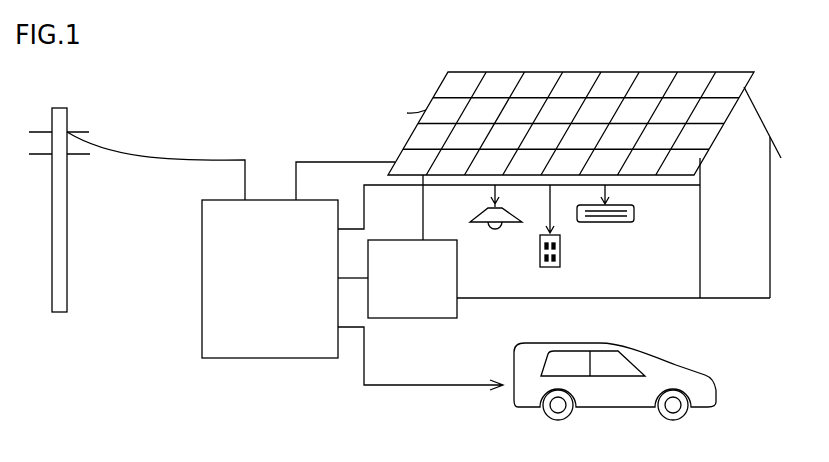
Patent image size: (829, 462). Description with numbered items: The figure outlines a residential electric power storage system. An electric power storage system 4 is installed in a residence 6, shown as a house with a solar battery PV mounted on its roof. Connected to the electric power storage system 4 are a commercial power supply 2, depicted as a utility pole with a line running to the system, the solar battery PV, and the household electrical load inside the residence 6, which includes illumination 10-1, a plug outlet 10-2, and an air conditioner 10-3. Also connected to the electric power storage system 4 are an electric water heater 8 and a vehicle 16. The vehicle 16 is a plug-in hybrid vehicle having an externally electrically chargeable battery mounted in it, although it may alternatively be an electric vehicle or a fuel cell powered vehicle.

The commercial power supply 2 is at (59, 108).
The electric power storage system 4 is at (202, 229).
The residence 6 is at (781, 97).
The electric water heater 8 is at (427, 319).
The illumination 10-1 is at (497, 229).
The plug outlet 10-2 is at (554, 268).
The air conditioner 10-3 is at (618, 223).
The vehicle 16 is at (718, 398).